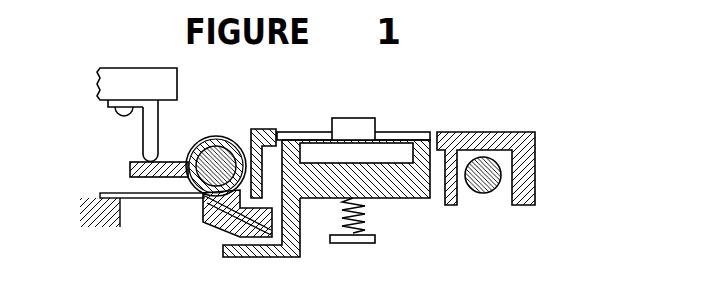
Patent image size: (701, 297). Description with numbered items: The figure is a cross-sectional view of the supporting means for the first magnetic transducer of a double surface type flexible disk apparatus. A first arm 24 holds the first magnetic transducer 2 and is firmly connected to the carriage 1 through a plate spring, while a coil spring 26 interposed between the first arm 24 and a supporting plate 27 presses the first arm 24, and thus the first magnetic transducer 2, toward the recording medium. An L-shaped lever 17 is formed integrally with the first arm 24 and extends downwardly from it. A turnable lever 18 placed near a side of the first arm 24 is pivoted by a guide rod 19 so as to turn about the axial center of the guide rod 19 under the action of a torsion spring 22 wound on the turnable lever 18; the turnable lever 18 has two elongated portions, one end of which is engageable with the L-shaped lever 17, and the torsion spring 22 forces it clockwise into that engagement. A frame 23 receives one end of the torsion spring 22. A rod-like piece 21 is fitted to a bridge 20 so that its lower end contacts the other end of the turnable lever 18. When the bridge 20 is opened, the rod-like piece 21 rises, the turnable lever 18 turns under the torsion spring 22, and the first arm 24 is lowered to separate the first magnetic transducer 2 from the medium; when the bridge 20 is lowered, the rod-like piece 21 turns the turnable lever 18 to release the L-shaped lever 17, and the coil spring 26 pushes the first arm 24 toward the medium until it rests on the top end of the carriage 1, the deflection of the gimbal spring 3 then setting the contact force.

The carriage 1 is at (478, 132).
The first magnetic transducer 2 is at (356, 118).
The gimbal spring 3 is at (393, 140).
The L-shaped lever 17 is at (302, 249).
The turnable lever 18 is at (204, 222).
The guide rod 19 is at (218, 158).
The bridge 20 is at (177, 83).
The rod-like piece 21 is at (158, 128).
The torsion spring 22 is at (143, 178).
The frame 23 is at (105, 226).
The first arm 24 is at (408, 198).
The coil spring 26 is at (362, 210).
The supporting plate 27 is at (355, 243).